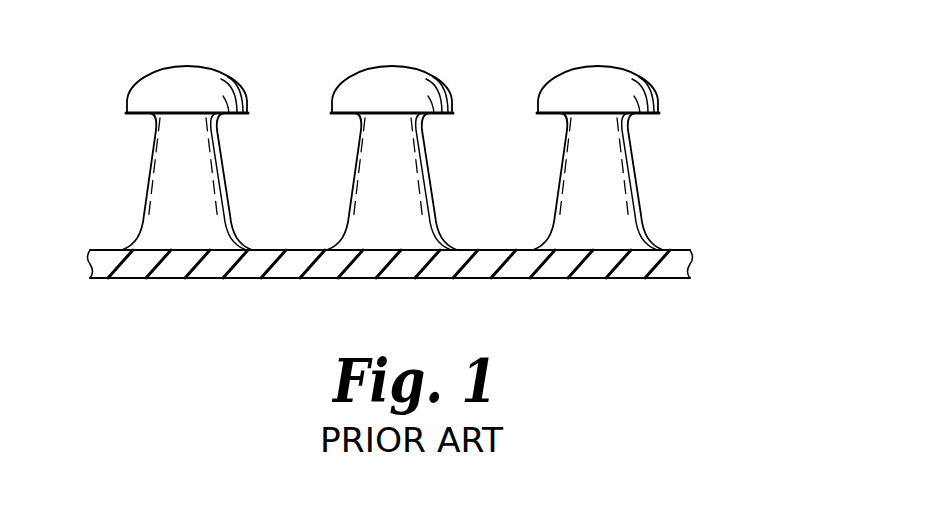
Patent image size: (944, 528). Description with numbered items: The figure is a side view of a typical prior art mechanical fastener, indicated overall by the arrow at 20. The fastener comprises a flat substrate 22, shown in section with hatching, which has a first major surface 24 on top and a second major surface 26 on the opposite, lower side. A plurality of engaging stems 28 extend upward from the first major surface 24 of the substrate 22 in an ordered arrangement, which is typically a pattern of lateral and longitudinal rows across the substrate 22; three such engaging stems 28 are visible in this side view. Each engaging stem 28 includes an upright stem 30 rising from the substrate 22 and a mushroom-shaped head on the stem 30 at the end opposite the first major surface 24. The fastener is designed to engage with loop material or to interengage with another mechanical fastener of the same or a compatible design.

The prior art mushroom-type fastener 20 is at (414, 183).
The substrate 22 is at (518, 267).
The first major surface 24 is at (277, 248).
The second major surface 26 is at (371, 217).
The engaging stems 28 is at (130, 66).
The stem 30 is at (148, 190).